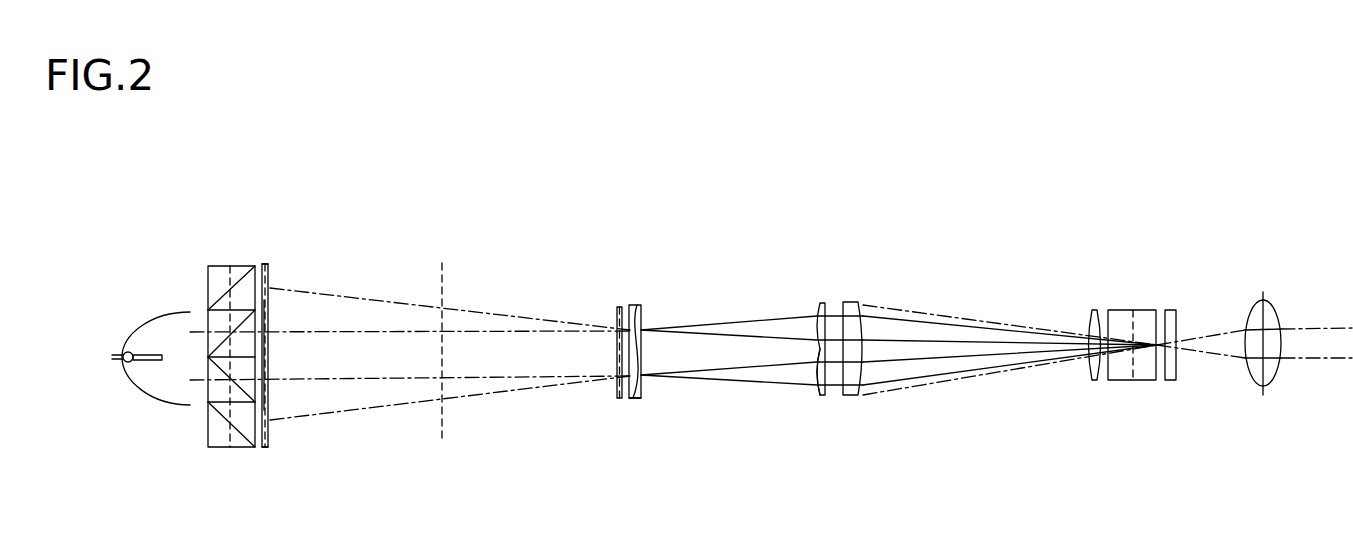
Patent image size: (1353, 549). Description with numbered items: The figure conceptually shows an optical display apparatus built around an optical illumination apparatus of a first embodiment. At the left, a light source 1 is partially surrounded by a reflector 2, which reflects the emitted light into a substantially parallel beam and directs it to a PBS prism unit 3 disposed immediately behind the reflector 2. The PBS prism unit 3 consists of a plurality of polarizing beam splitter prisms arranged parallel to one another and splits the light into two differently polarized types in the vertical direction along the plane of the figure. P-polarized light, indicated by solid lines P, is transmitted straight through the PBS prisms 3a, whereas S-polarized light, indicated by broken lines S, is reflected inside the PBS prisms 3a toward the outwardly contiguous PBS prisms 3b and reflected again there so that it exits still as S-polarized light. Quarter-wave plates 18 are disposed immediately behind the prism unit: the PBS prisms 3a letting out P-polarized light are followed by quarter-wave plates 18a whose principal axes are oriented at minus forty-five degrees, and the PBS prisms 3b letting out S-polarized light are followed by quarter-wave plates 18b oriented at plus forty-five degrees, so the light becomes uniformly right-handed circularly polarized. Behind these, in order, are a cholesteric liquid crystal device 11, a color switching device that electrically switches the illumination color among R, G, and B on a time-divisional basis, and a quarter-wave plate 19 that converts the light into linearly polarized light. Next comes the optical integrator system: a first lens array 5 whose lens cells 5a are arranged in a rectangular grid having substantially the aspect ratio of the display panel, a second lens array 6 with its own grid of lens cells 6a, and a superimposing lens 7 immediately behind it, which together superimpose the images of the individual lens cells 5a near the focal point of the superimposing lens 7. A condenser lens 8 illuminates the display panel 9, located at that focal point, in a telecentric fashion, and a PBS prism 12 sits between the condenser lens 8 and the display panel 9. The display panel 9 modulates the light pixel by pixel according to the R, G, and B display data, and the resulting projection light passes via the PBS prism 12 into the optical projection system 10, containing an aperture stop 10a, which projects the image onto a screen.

The light source 1 is at (123, 350).
The reflector 2 is at (137, 323).
The PBS prism unit 3 is at (196, 328).
The PBS prisms 3a is at (208, 322).
The PBS prisms 3b is at (208, 283).
The quarter-wave plates 18 is at (265, 254).
The quarter-wave plates 18a is at (270, 360).
The quarter-wave plates 18b is at (268, 282).
The cholesteric liquid crystal device 11 is at (442, 263).
The quarter-wave plate 19 is at (617, 307).
The first lens array 5 is at (642, 300).
The lens cells 5a is at (642, 393).
The second lens array 6 is at (817, 290).
The lens cells 6a is at (818, 390).
The superimposing lens 7 is at (848, 307).
The condenser lens 8 is at (1096, 310).
The PBS prism 12 is at (1137, 310).
The display panel 9 is at (1170, 310).
The optical projection system 10 is at (1277, 316).
The aperture stop 10a is at (1265, 393).
The S-polarized light S is at (204, 332).
The P-polarized light P is at (200, 334).